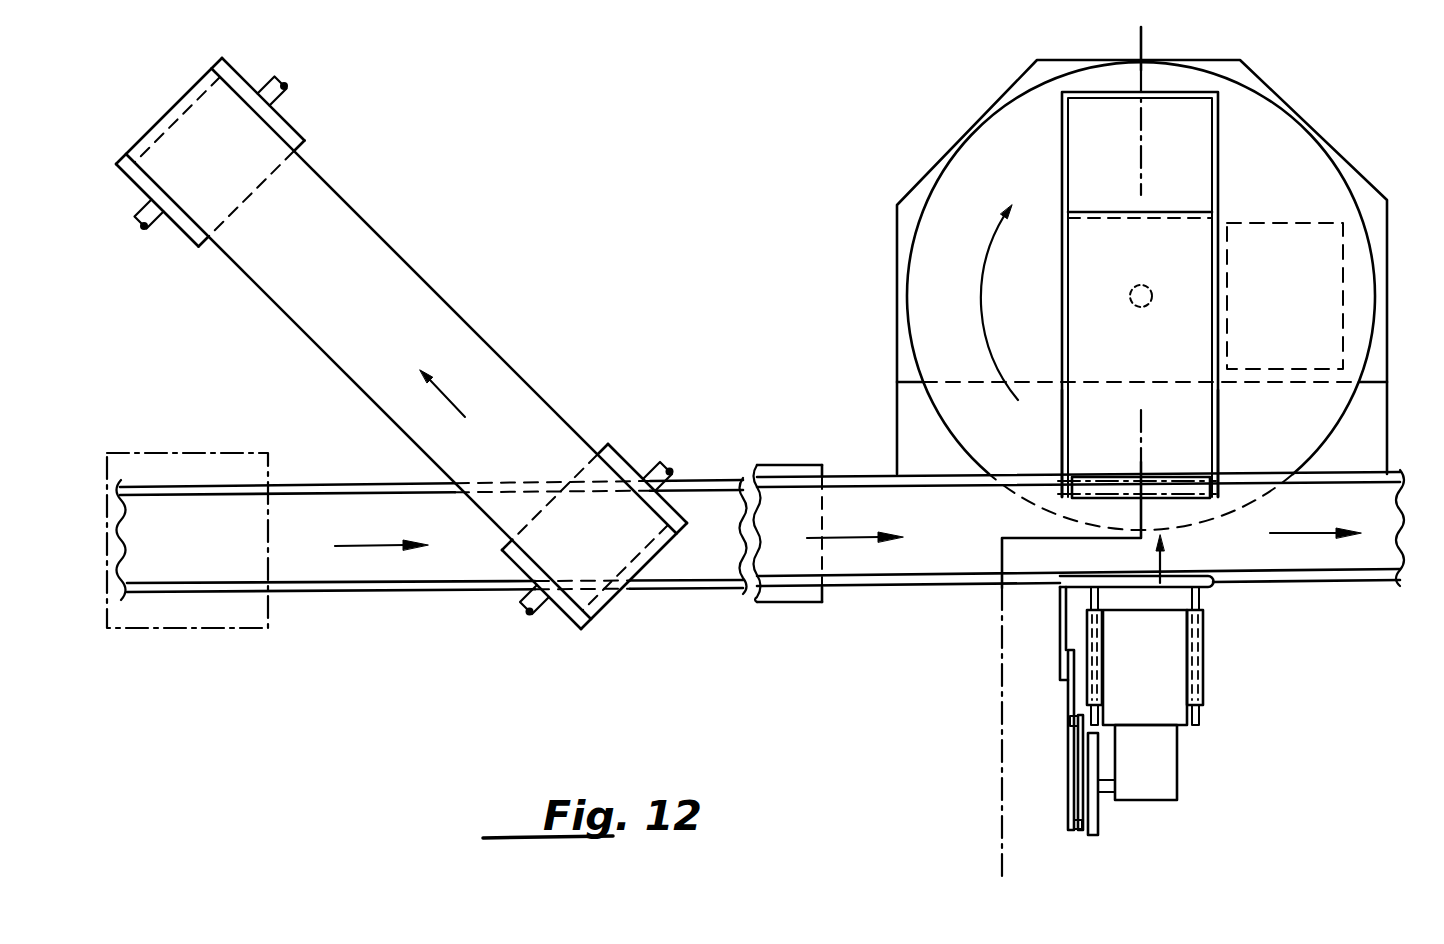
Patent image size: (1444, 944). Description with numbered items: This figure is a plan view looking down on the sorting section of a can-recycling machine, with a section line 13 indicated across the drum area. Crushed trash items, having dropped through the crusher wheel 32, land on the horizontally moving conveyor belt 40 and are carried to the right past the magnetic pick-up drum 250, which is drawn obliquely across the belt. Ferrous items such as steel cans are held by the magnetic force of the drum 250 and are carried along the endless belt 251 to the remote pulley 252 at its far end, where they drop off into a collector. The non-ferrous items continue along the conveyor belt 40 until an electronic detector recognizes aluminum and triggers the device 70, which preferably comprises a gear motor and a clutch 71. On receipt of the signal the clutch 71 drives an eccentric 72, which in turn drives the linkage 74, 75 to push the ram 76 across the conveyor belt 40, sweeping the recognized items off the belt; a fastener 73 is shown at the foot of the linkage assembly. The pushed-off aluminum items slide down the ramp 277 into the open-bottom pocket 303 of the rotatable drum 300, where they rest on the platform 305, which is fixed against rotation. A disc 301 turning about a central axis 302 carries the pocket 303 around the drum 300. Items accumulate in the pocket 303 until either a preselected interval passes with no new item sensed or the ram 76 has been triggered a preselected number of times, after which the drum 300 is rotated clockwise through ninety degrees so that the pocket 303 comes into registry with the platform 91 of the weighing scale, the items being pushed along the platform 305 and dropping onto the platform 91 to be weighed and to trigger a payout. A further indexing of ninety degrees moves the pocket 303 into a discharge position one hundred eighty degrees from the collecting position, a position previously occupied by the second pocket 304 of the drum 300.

The section line 13- 13 is at (1123, 35).
The wheel 32 is at (190, 460).
The conveyor belt 40 is at (435, 600).
The device 70 is at (1172, 673).
The clutch 71 is at (1163, 770).
The eccentric 72 is at (1095, 817).
The fastener 73 is at (1076, 826).
The linkage 74 is at (1078, 763).
The linkage 75 is at (1072, 697).
The ram 76 is at (1197, 497).
The platform 91 is at (1355, 280).
The magnetic pick-up drum 250 is at (620, 455).
The endless belt 251 is at (416, 279).
The remote pulley 252 is at (283, 133).
The ramp 277 is at (1101, 360).
The rotatable drum 300 is at (1360, 165).
The rotary disc 301 is at (1292, 134).
The disc axis 302 is at (1150, 287).
The pocket 303 is at (1090, 142).
The pocket 304 is at (1185, 435).
The platform 305 is at (1373, 415).